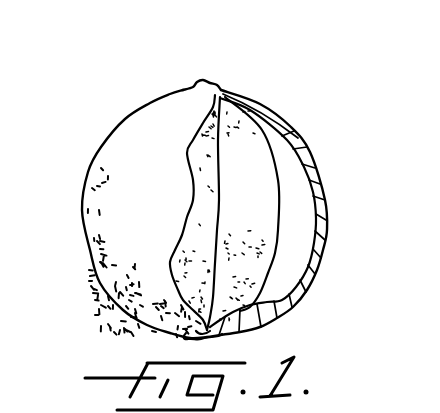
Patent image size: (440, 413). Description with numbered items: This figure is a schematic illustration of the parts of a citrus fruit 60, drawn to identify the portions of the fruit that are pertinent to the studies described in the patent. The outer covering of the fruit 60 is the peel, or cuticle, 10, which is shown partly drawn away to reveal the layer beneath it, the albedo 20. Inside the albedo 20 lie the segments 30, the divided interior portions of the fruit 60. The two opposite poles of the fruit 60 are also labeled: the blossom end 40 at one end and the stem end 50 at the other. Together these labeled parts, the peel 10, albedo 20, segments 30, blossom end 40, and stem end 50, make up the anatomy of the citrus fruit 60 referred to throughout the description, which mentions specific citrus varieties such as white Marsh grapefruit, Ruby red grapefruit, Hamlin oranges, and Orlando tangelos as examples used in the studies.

The peel 10 is at (290, 127).
The albedo 20 is at (308, 175).
The segments 30 is at (260, 272).
The blossom end 40 is at (218, 87).
The stem end 50 is at (285, 295).
The fruit 60 is at (111, 146).